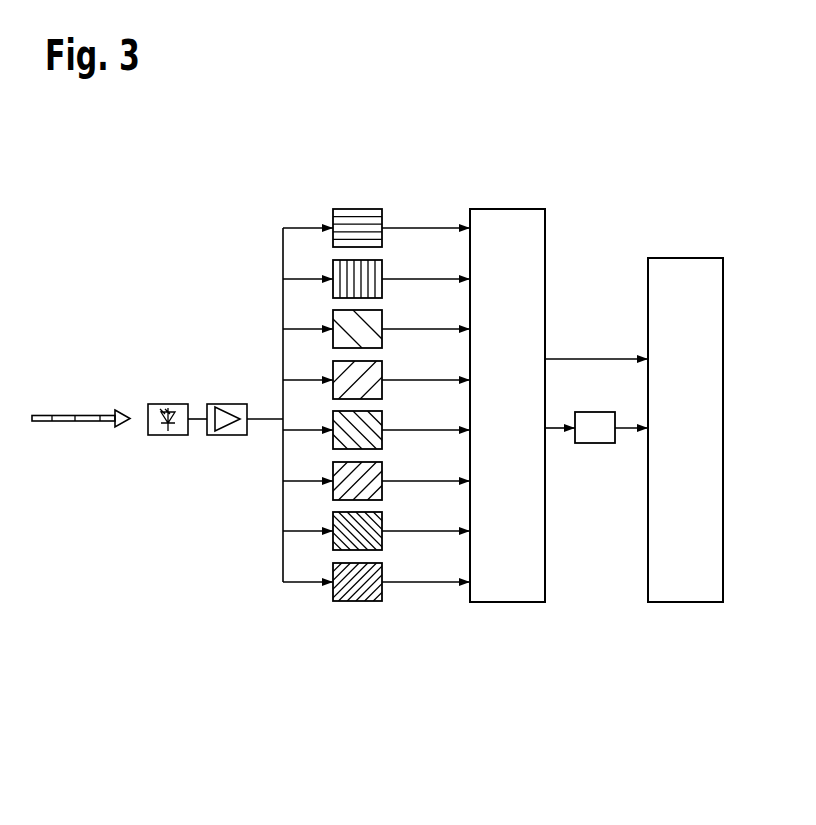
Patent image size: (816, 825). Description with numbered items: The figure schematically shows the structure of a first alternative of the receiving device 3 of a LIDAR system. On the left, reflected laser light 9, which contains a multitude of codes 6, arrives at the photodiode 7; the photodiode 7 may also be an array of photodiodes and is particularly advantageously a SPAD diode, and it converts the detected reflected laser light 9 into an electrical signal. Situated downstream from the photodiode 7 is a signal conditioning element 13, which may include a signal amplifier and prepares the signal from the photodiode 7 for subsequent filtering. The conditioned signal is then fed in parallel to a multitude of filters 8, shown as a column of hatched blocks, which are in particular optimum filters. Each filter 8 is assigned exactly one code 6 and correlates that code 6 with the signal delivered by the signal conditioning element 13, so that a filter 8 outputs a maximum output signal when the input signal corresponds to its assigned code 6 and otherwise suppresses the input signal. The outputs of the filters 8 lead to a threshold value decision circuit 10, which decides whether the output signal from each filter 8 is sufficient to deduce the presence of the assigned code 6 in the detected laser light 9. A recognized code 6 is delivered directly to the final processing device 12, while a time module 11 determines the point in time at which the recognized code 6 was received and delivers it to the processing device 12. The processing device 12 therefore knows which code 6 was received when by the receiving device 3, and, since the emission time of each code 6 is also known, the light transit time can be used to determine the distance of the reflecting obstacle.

The receiving device 3 is at (264, 262).
The codes 6 is at (43, 415).
The photodiode 7 is at (168, 404).
The filters 8 is at (368, 244).
The reflected laser light 9 is at (142, 340).
The threshold value decision circuit 10 is at (510, 602).
The time module 11 is at (597, 443).
The processing device 12 is at (688, 602).
The signal conditioning element 13 is at (237, 404).